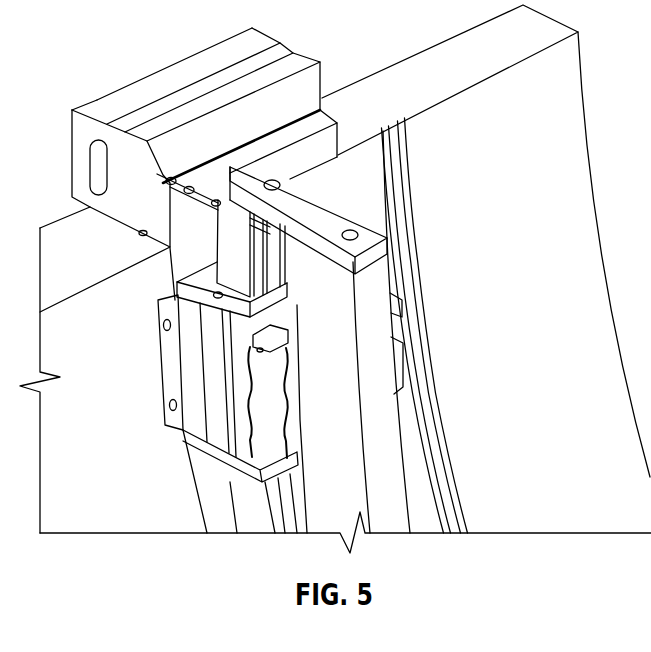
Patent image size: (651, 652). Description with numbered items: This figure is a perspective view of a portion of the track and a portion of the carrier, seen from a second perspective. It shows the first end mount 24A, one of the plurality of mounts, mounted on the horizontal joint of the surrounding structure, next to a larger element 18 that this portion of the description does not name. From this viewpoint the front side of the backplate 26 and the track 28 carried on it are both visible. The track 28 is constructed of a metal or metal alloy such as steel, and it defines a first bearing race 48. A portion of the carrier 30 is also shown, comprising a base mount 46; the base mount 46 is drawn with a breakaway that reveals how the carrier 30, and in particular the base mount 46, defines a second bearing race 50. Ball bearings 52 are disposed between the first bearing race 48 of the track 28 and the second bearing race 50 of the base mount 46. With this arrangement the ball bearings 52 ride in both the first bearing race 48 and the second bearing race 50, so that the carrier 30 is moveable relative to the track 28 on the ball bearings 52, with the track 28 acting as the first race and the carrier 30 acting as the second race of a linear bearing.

The curved panel 18 is at (492, 312).
The first end mount 24A is at (129, 50).
The backplate 26 is at (352, 277).
The track 28 is at (266, 215).
The carrier 30 is at (150, 340).
The base mount 46 is at (197, 373).
The first bearing race 48 is at (266, 247).
The second bearing race 50 is at (288, 374).
The ball bearings 52 is at (252, 333).